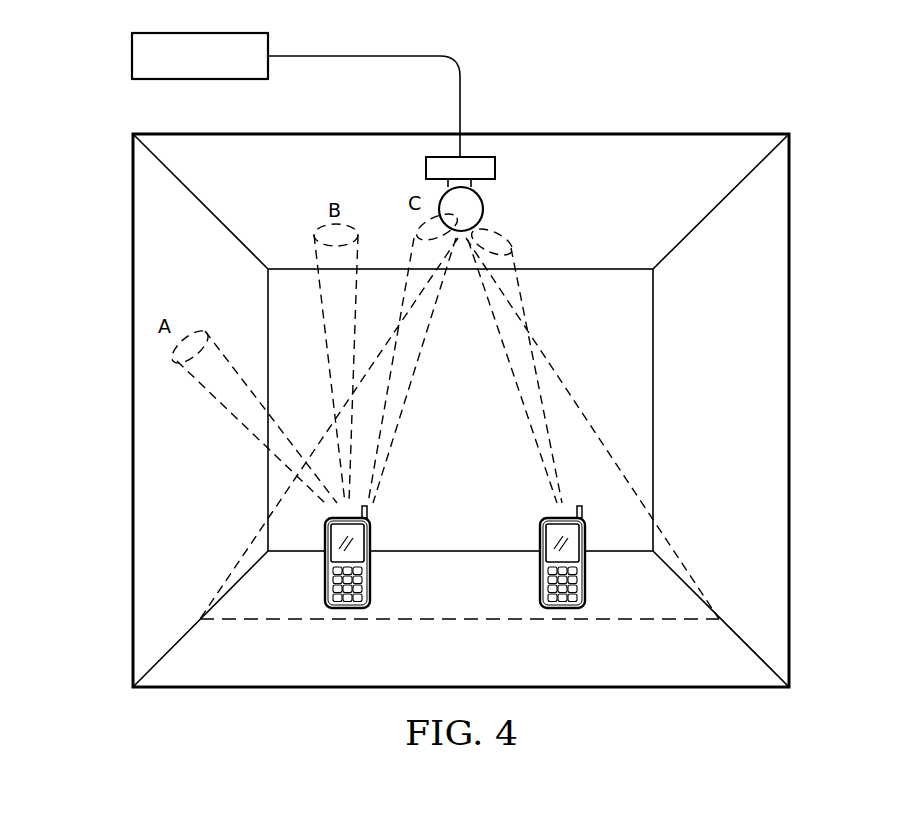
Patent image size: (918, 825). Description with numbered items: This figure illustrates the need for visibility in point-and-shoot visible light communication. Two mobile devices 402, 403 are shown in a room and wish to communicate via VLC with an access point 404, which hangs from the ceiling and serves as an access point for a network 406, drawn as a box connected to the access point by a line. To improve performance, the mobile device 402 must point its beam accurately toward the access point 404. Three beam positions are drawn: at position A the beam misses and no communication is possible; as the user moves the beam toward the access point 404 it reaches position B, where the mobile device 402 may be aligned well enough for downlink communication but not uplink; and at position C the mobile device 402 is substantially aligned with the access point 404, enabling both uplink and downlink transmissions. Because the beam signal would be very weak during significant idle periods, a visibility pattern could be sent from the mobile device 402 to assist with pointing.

The mobile device 402 is at (347, 608).
The mobile device 403 is at (563, 608).
The access point 404 is at (501, 198).
The network 406 is at (130, 44).